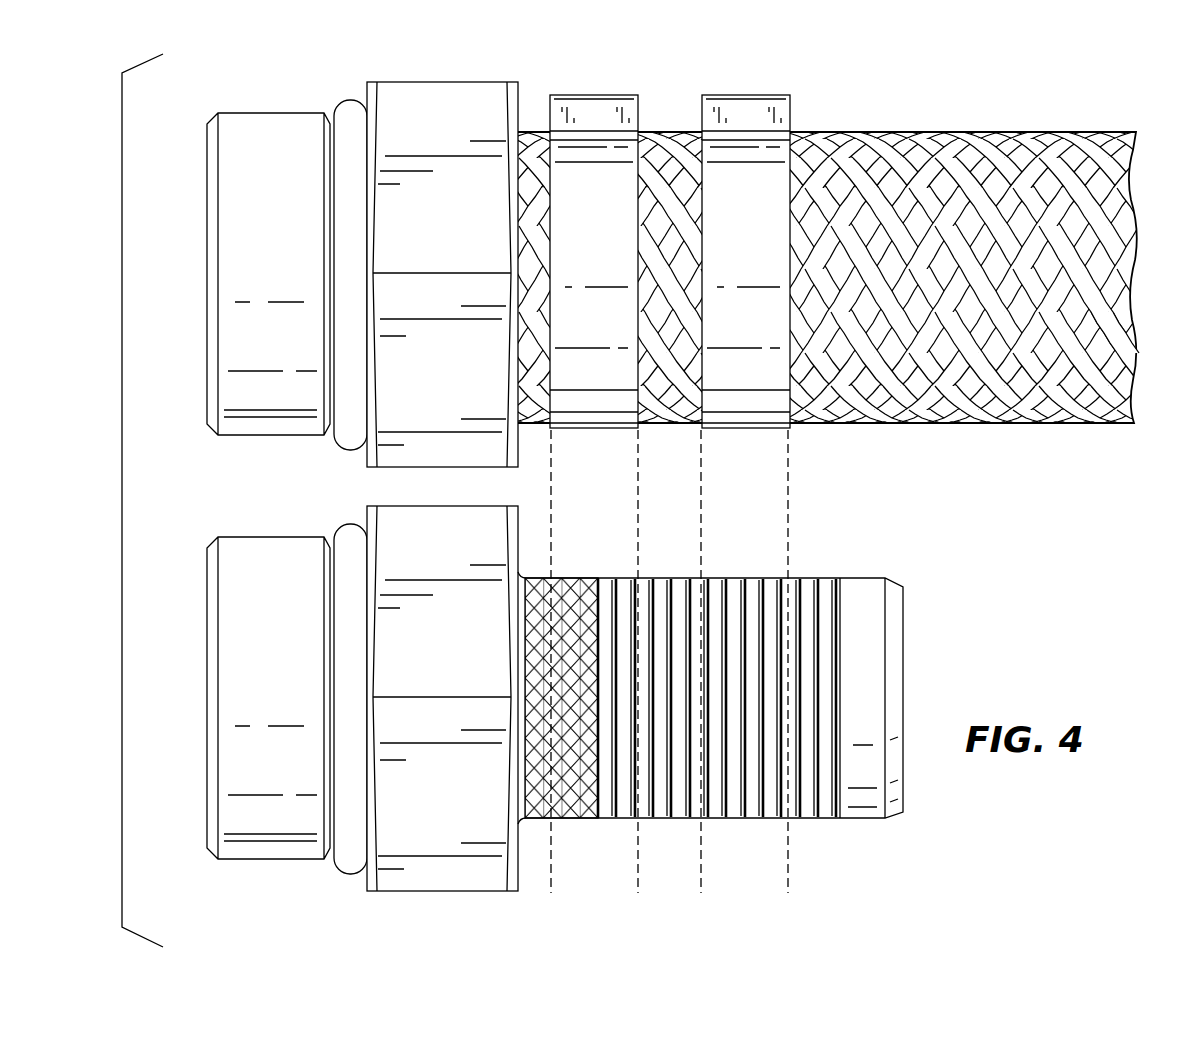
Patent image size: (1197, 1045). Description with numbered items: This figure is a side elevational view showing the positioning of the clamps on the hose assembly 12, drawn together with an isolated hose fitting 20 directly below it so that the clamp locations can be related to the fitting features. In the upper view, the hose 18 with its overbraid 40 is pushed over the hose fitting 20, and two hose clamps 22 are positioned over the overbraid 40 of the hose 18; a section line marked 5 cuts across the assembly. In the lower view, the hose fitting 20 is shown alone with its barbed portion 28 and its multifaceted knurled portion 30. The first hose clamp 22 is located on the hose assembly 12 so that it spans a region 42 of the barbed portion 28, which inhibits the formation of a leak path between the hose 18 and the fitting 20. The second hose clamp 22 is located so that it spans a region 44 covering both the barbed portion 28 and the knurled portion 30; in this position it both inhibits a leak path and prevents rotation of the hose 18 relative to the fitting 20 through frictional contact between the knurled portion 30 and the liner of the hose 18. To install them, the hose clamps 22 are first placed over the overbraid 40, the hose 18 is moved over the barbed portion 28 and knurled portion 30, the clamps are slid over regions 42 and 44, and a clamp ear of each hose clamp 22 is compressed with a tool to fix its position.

The section line 5- 5 is at (196, 273).
The hose assembly 12 is at (303, 68).
The hose 18 is at (1040, 105).
The hose fitting 20 is at (236, 452).
The hose clamp 22 is at (600, 92).
The barbed portion 28 is at (663, 577).
The knurled portion 30 is at (576, 577).
The overbraid 40 is at (1046, 374).
The region 42 is at (753, 838).
The region 44 is at (603, 838).